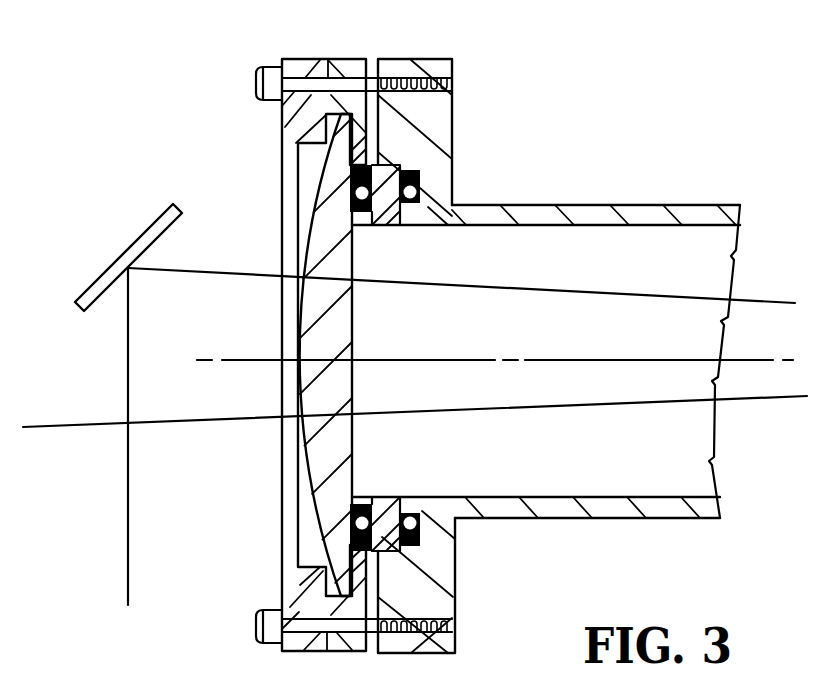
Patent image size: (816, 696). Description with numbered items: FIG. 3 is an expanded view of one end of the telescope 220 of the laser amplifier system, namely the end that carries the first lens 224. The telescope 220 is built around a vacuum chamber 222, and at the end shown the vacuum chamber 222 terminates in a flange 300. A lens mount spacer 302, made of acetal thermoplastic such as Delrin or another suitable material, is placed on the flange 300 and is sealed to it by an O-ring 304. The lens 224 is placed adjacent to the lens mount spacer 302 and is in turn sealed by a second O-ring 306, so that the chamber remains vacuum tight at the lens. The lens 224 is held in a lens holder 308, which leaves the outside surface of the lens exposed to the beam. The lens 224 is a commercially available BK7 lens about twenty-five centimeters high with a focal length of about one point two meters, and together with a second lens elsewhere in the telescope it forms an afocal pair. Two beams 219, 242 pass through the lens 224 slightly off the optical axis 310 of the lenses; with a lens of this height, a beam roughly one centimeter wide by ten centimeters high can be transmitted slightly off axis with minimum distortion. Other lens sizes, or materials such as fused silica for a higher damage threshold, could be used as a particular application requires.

The beam 219 is at (538, 290).
The telescope 220 is at (645, 111).
The vacuum chamber 222 is at (622, 205).
The first lens 224 is at (323, 235).
The beam 242 is at (543, 411).
The flange 300 is at (453, 68).
The lens mount spacer 302 is at (372, 186).
The O-ring 304 is at (420, 187).
The O-ring 306 is at (403, 172).
The lens holder 308 is at (302, 58).
The axis 310 is at (587, 360).